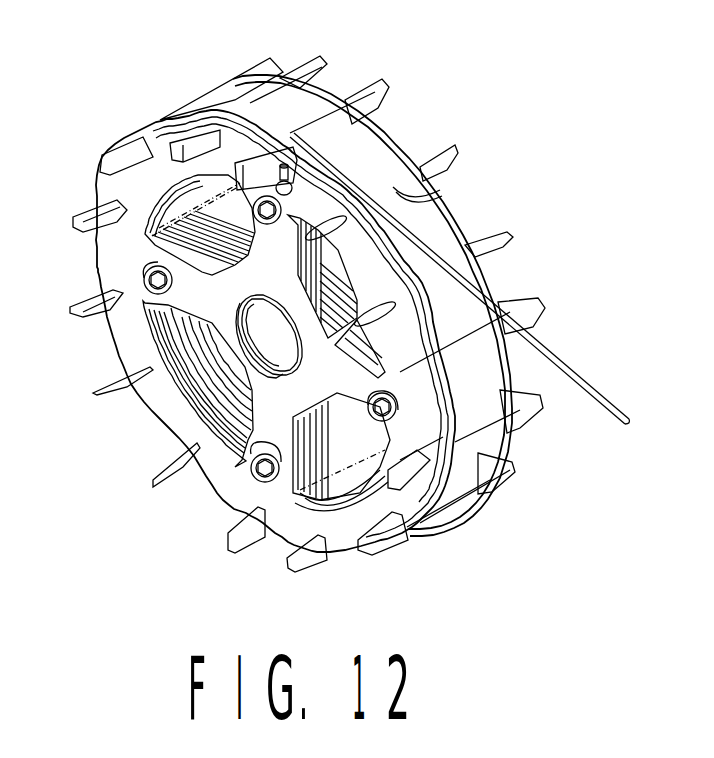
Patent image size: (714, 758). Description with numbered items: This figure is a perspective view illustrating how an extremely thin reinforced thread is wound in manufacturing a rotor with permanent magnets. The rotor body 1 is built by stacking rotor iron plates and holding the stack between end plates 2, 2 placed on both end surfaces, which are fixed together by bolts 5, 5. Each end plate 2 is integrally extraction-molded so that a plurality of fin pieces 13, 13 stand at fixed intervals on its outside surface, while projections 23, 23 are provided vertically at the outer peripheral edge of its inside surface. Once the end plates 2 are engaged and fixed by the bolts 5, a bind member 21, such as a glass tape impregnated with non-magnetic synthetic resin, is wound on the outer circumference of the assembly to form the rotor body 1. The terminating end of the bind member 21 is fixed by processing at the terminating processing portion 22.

The rotor body 1 is at (145, 108).
The end plate 2 is at (120, 348).
The bolt 5 is at (257, 475).
The fin piece 13 is at (507, 233).
The bind member 21 is at (600, 397).
The terminating processing portion 22 is at (278, 176).
The projection 23 is at (397, 187).